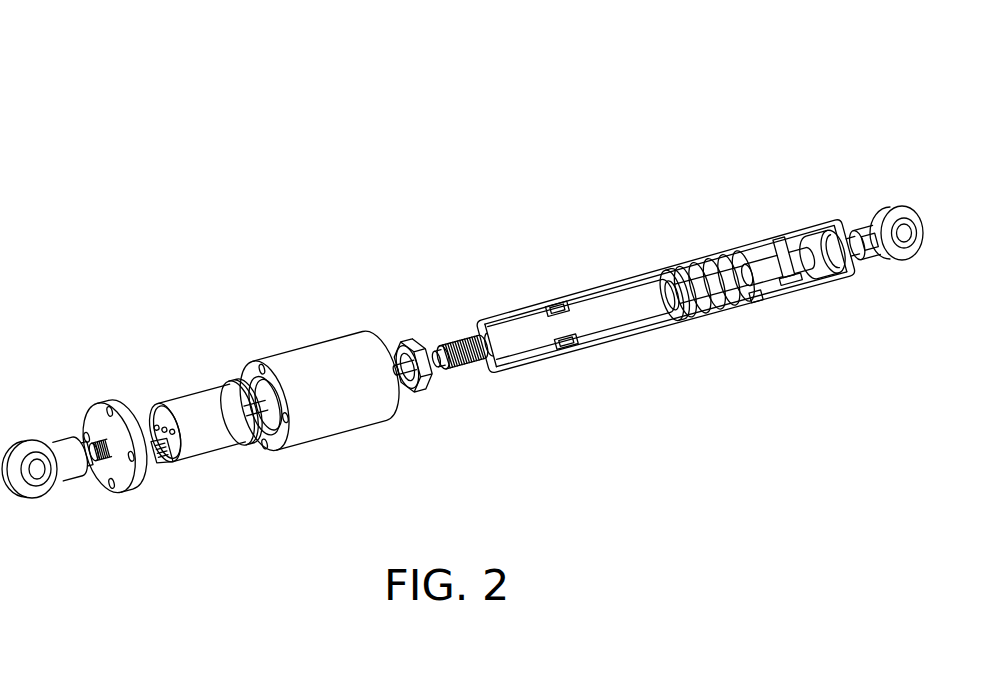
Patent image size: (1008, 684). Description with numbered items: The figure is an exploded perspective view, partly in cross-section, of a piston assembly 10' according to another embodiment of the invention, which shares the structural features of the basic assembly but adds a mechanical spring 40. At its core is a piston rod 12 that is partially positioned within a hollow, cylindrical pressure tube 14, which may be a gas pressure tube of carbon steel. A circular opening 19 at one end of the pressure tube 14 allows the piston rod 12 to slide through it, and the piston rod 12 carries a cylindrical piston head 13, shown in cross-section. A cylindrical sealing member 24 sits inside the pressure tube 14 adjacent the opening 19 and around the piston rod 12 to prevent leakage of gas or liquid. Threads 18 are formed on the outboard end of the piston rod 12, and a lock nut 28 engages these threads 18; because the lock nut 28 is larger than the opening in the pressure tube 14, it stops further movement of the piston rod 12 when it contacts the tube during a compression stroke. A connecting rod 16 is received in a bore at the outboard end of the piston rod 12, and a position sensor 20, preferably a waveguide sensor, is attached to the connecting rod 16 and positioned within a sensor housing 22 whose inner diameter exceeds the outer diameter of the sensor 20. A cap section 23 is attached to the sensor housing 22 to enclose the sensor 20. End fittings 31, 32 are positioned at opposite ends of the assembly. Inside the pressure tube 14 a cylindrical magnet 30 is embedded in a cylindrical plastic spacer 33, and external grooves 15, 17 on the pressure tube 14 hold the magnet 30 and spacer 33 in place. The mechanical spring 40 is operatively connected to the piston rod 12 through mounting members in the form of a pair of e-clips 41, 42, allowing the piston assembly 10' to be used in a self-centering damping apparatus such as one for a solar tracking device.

The piston assembly 10' is at (462, 268).
The piston rod 12 is at (623, 310).
The piston head 13 is at (767, 236).
The pressure tube 14 is at (813, 265).
The external groove 15 is at (542, 302).
The connecting rod 16 is at (254, 452).
The external groove 17 is at (617, 330).
The threads 18 is at (447, 345).
The circular opening 19 is at (482, 330).
The position sensor 20 is at (187, 413).
The sensor housing 22 is at (296, 372).
The cap section 23 is at (90, 426).
The sealing member 24 is at (510, 356).
The lock nut 28 is at (413, 357).
The magnet 30 is at (548, 300).
The end fitting 31 is at (14, 462).
The end fitting 32 is at (883, 212).
The plastic spacer 33 is at (575, 340).
The mechanical spring 40 is at (678, 283).
The e-clip 41 is at (668, 302).
The e-clip 42 is at (752, 300).